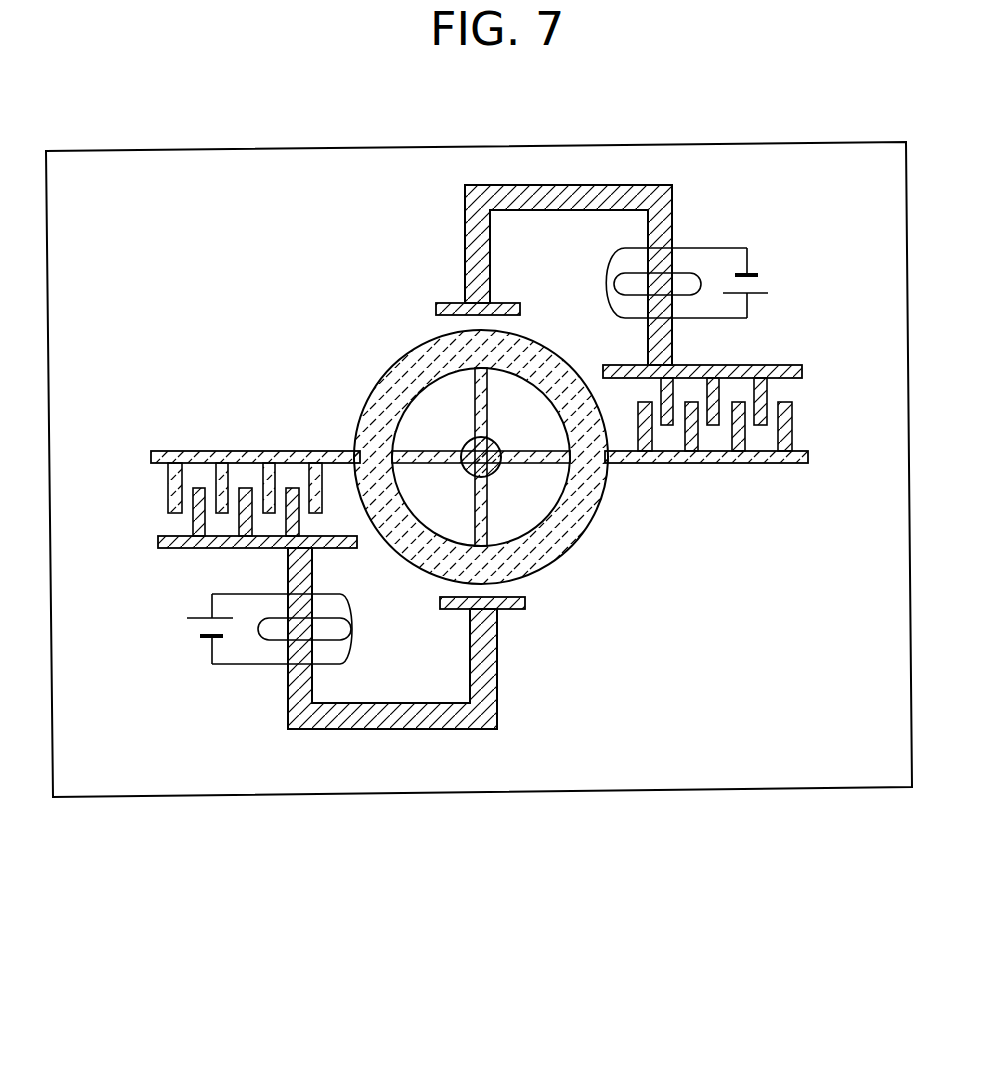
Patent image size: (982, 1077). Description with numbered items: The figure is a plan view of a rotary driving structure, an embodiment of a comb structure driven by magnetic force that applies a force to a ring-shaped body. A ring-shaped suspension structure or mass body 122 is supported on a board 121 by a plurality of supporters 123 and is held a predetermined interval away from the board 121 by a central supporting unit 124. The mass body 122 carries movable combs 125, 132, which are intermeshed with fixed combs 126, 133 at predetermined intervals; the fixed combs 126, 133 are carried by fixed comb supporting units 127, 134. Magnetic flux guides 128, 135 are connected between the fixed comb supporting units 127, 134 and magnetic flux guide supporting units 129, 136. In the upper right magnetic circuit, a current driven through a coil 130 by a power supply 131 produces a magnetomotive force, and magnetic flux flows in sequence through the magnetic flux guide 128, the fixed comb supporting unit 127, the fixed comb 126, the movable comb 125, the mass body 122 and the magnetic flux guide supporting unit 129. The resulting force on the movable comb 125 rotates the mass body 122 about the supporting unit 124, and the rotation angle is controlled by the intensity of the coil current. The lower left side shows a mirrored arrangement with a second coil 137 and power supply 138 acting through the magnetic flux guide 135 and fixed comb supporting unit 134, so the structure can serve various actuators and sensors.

The board 121 is at (143, 773).
The ring-shaped suspension structure (mass body) 122 is at (377, 403).
The supporters 123 is at (477, 400).
The supporting unit 124 is at (497, 465).
The movable comb 125 is at (752, 465).
The fixed comb 126 is at (763, 403).
The fixed comb supporting unit 127 is at (804, 370).
The magnetic flux guide 128 is at (674, 220).
The magnetic flux guide supporting unit 129 is at (445, 303).
The coil 130 is at (700, 285).
The power supply 131 is at (765, 290).
The movable comb 132 is at (210, 451).
The fixed comb 133 is at (192, 490).
The fixed comb supporting unit 134 is at (165, 542).
The magnetic flux guide 135 is at (288, 687).
The magnetic flux guide supporting unit 136 is at (507, 612).
The lower coil 137 is at (268, 617).
The lower voltage source 138 is at (195, 627).